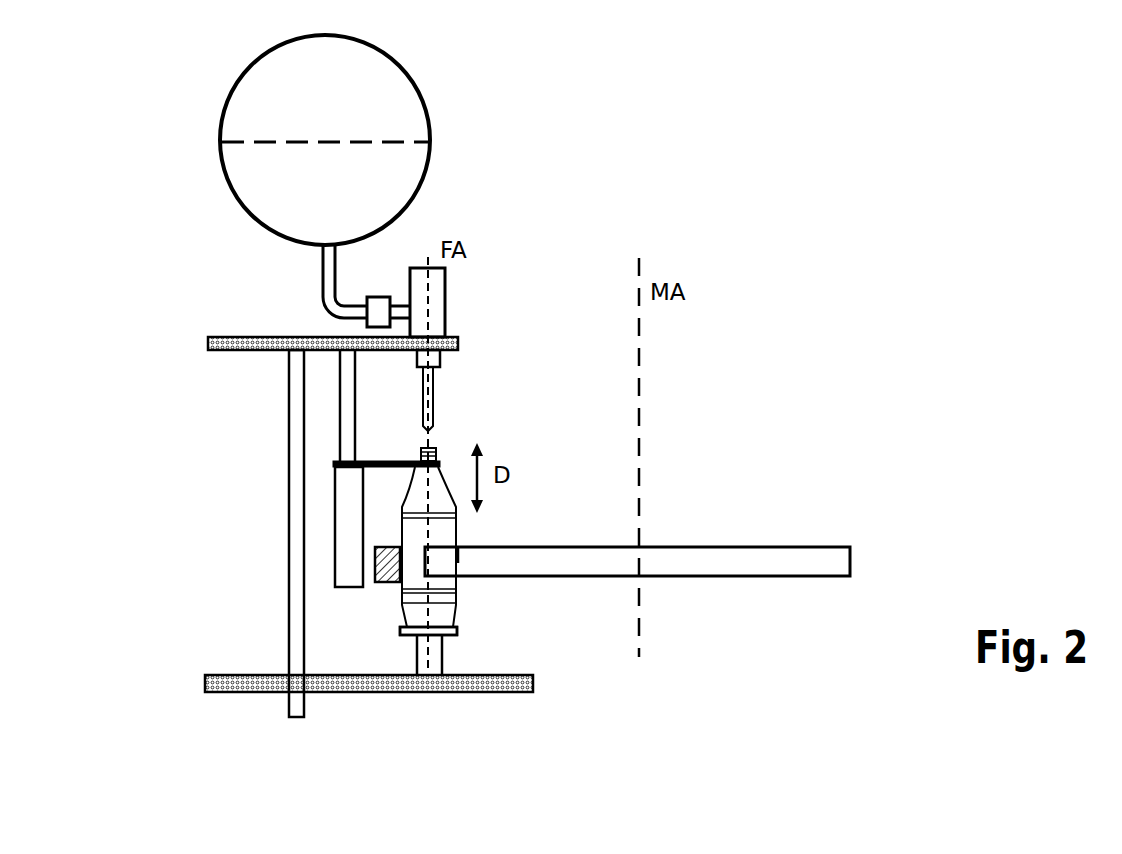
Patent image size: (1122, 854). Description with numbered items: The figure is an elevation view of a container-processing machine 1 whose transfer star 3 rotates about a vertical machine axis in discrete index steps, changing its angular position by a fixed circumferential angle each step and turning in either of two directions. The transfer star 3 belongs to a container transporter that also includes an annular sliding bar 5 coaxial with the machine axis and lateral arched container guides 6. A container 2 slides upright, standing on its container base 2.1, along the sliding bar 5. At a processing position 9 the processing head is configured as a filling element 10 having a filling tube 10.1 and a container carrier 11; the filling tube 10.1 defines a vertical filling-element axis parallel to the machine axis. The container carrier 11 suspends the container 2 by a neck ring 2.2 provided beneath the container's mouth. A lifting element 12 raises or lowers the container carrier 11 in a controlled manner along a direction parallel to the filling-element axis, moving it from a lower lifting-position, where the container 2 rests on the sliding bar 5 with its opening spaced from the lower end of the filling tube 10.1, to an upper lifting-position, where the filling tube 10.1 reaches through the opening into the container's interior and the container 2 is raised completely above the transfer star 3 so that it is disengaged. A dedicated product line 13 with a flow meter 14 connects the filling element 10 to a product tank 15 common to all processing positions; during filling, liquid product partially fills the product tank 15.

The container-processing machine 1 is at (792, 148).
The container 2 is at (440, 537).
The container base 2.1 is at (458, 628).
The neck ring 2.2 is at (436, 456).
The transfer star 3 is at (762, 550).
The sliding bar 5 is at (457, 635).
The lateral arched container guides 6 is at (388, 582).
The processing position 9 is at (523, 487).
The filling element 10 is at (445, 302).
The filling tube 10.1 is at (423, 410).
The container carrier 11 is at (367, 470).
The lifting element 12 is at (347, 548).
The product line 13 is at (323, 278).
The flow meter 14 is at (380, 297).
The product tank 15 is at (225, 183).